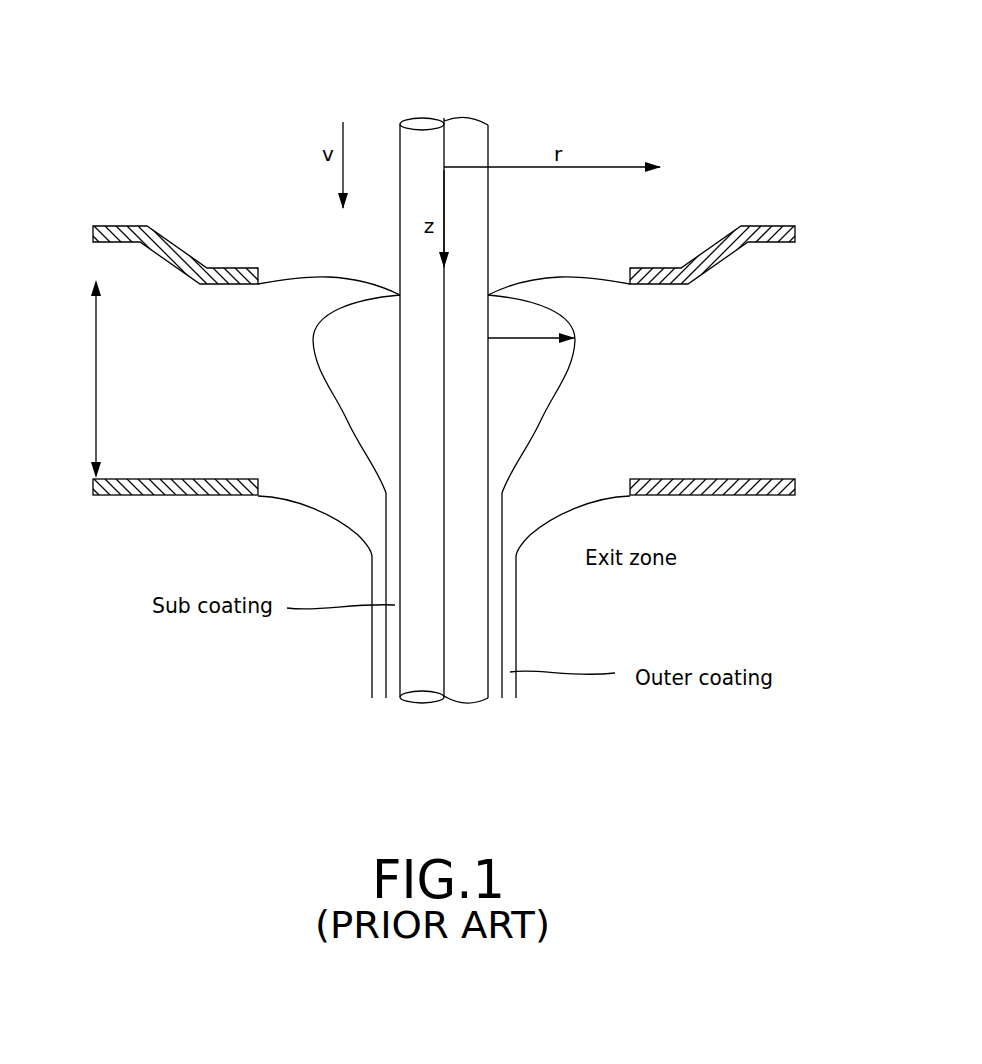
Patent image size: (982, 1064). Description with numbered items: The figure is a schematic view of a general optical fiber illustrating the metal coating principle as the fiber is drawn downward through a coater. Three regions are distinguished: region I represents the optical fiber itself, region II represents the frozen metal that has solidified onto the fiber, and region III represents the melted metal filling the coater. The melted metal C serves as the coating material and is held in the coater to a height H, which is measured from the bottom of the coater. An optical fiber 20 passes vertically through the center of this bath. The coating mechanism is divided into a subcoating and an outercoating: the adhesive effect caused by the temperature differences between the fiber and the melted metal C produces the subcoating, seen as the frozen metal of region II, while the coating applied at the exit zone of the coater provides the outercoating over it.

The optical fiber 20 is at (465, 133).
The melted metal C is at (762, 381).
The height from the bottom of a coater H is at (107, 379).
The optical fiber I is at (424, 361).
The frozen metal II is at (531, 356).
The melted metal III is at (657, 390).